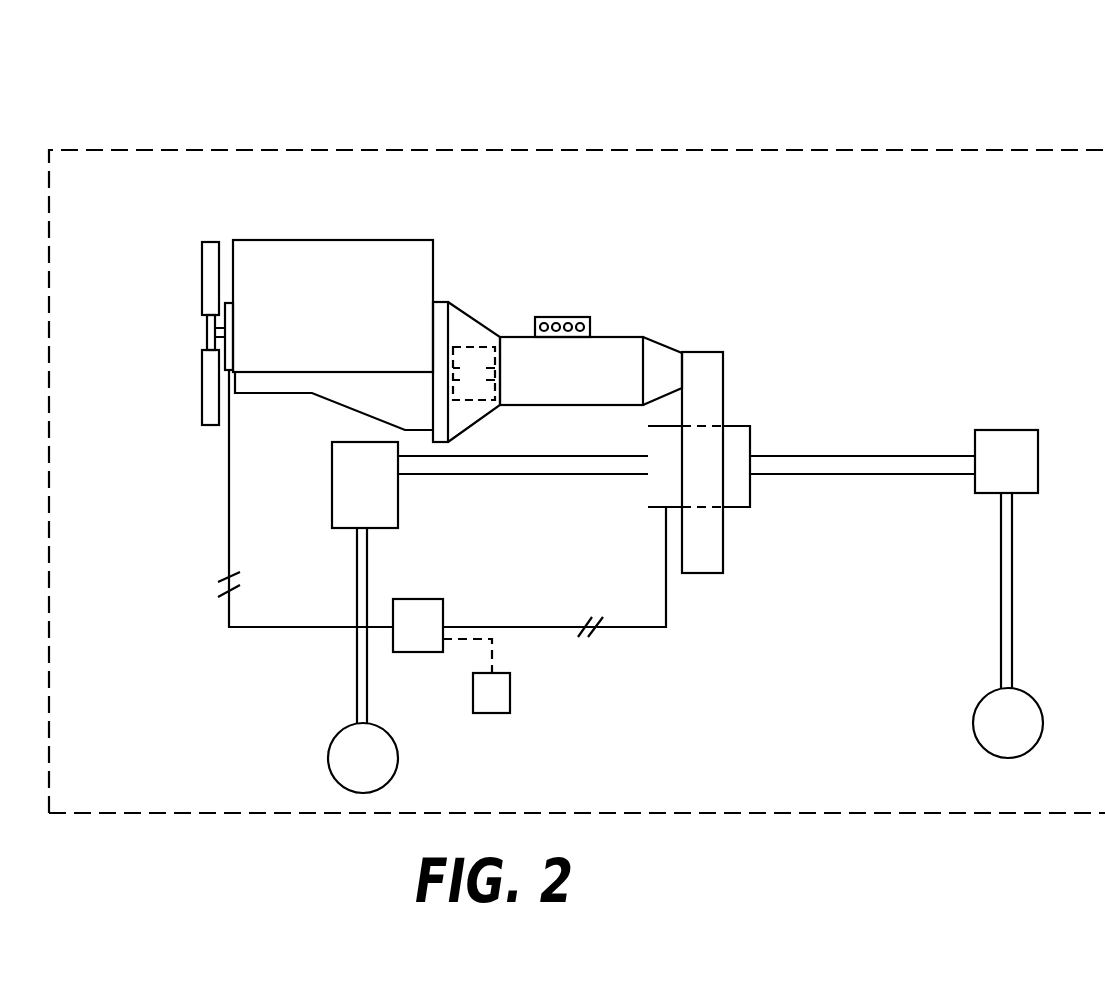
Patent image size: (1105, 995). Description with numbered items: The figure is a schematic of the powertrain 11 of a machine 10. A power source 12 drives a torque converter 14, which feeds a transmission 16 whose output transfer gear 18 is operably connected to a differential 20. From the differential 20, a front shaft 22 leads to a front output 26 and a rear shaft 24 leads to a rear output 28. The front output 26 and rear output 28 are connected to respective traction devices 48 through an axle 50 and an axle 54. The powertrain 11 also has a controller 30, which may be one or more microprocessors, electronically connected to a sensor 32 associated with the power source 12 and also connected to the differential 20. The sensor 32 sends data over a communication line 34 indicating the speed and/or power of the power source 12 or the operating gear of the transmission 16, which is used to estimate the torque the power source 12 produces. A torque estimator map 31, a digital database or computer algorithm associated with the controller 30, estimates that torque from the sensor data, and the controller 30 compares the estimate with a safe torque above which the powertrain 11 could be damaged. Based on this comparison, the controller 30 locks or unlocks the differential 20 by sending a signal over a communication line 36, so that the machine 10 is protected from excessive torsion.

The machine 10 is at (848, 96).
The powertrain 11 is at (875, 284).
The power source 12 is at (341, 330).
The torque converter 14 is at (467, 315).
The transmission 16 is at (584, 386).
The output transfer gear 18 is at (723, 377).
The differential 20 is at (750, 438).
The front shaft 22 is at (500, 476).
The rear shaft 24 is at (862, 476).
The front output 26 is at (347, 530).
The rear output 28 is at (1038, 463).
The controller 30 is at (418, 653).
The torque estimator map 31 is at (489, 713).
The sensor 32 is at (203, 371).
The communication line 34 is at (228, 535).
The communication line 36 is at (535, 627).
The traction devices 48 is at (328, 757).
The axle 50 is at (357, 673).
The axle 54 is at (1001, 595).